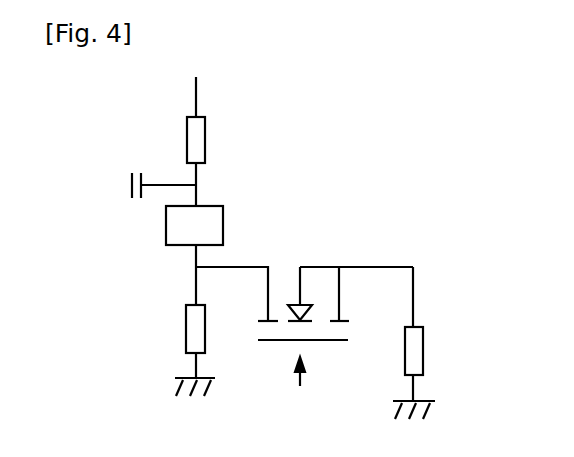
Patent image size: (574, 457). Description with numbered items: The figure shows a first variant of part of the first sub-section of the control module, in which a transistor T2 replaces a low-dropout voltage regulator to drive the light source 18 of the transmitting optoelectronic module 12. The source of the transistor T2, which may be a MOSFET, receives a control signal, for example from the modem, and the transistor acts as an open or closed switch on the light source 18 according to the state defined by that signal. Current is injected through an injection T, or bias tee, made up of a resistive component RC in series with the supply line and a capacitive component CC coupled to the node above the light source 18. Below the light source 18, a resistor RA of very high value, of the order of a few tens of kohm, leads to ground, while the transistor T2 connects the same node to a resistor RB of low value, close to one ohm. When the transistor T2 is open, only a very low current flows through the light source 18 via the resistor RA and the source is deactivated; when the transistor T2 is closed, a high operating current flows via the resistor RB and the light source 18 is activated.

The resistive component RC is at (205, 138).
The capacitive component CC is at (130, 178).
The transmitting optoelectronic module 12 is at (144, 234).
The light source 18 is at (166, 227).
The resistor RA is at (186, 337).
The transistor T2 is at (320, 266).
The resistor RB is at (405, 353).